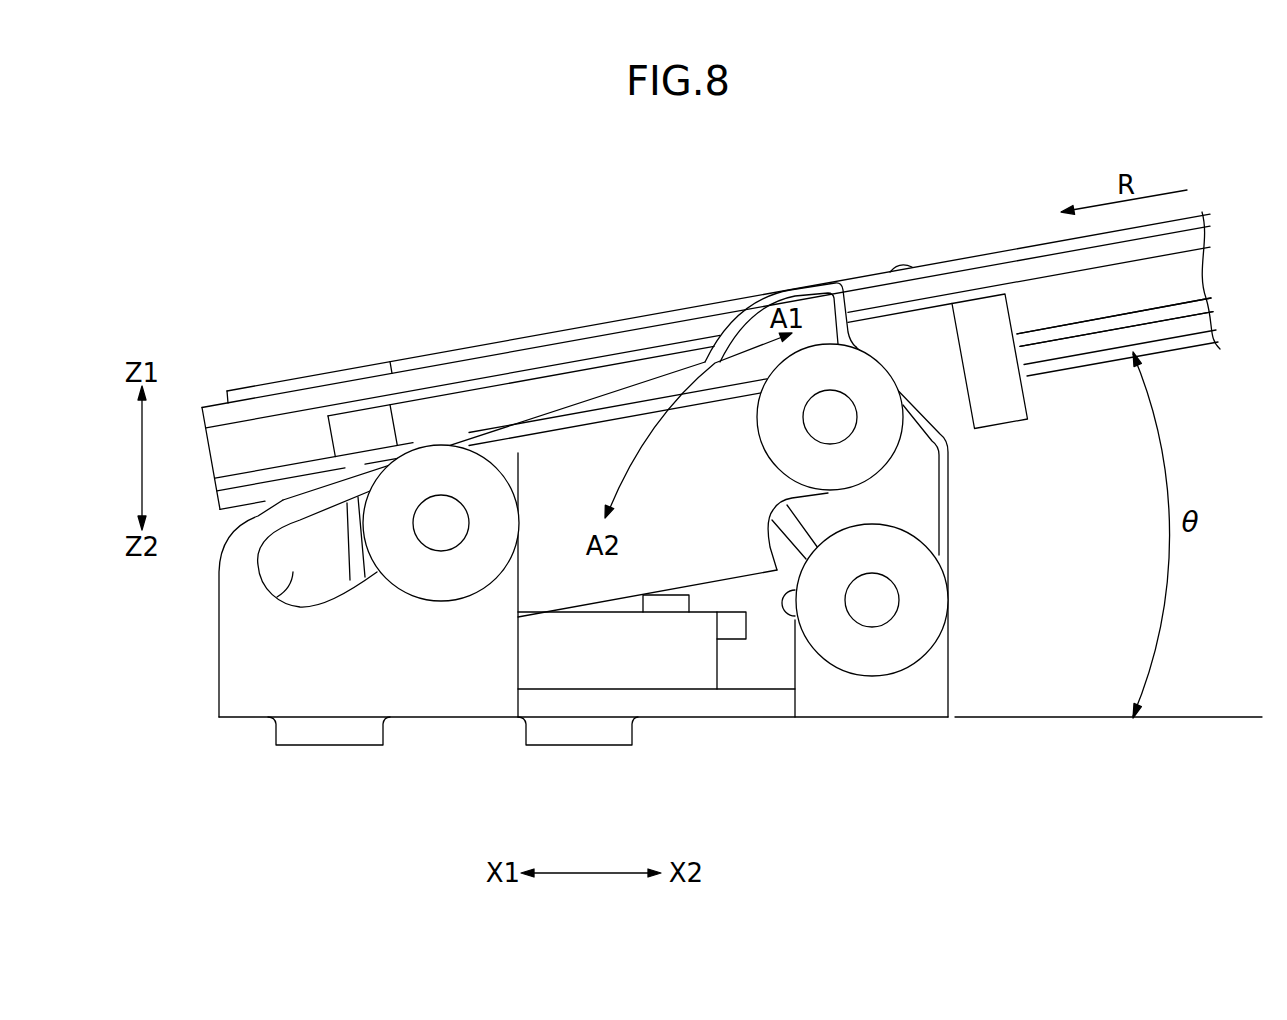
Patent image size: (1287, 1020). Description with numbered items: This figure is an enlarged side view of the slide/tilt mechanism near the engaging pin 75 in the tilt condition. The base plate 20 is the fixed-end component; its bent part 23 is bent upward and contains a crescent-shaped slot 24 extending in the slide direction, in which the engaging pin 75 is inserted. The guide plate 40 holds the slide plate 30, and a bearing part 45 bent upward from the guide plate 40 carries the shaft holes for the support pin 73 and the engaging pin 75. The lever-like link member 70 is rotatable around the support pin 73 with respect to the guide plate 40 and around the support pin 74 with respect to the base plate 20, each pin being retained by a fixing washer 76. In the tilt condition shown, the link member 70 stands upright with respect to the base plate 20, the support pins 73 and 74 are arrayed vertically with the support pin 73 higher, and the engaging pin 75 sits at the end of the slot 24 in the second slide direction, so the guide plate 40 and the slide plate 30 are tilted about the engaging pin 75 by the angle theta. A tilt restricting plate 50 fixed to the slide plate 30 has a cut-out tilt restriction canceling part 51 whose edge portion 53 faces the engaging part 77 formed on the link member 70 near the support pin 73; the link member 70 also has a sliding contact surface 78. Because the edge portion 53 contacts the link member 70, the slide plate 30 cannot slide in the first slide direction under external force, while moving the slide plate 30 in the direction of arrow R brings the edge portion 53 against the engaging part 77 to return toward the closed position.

The base plate 20 is at (747, 724).
The bent part 23 is at (333, 630).
The slot 24 is at (283, 593).
The slide plate 30 is at (1150, 312).
The guide plate 40 is at (640, 578).
The bearing part 45 is at (690, 455).
The tilt restricting plate 50 is at (1022, 238).
The tilt restriction canceling part 51 is at (590, 330).
The edge portion 53 is at (898, 268).
The link member 70 is at (962, 462).
The support pin 73 is at (830, 417).
The support pin 74 is at (872, 600).
The engaging pin 75 is at (441, 523).
The fixing washer 76 is at (474, 483).
The engaging part 77 is at (850, 303).
The sliding contact surface 78 is at (925, 410).